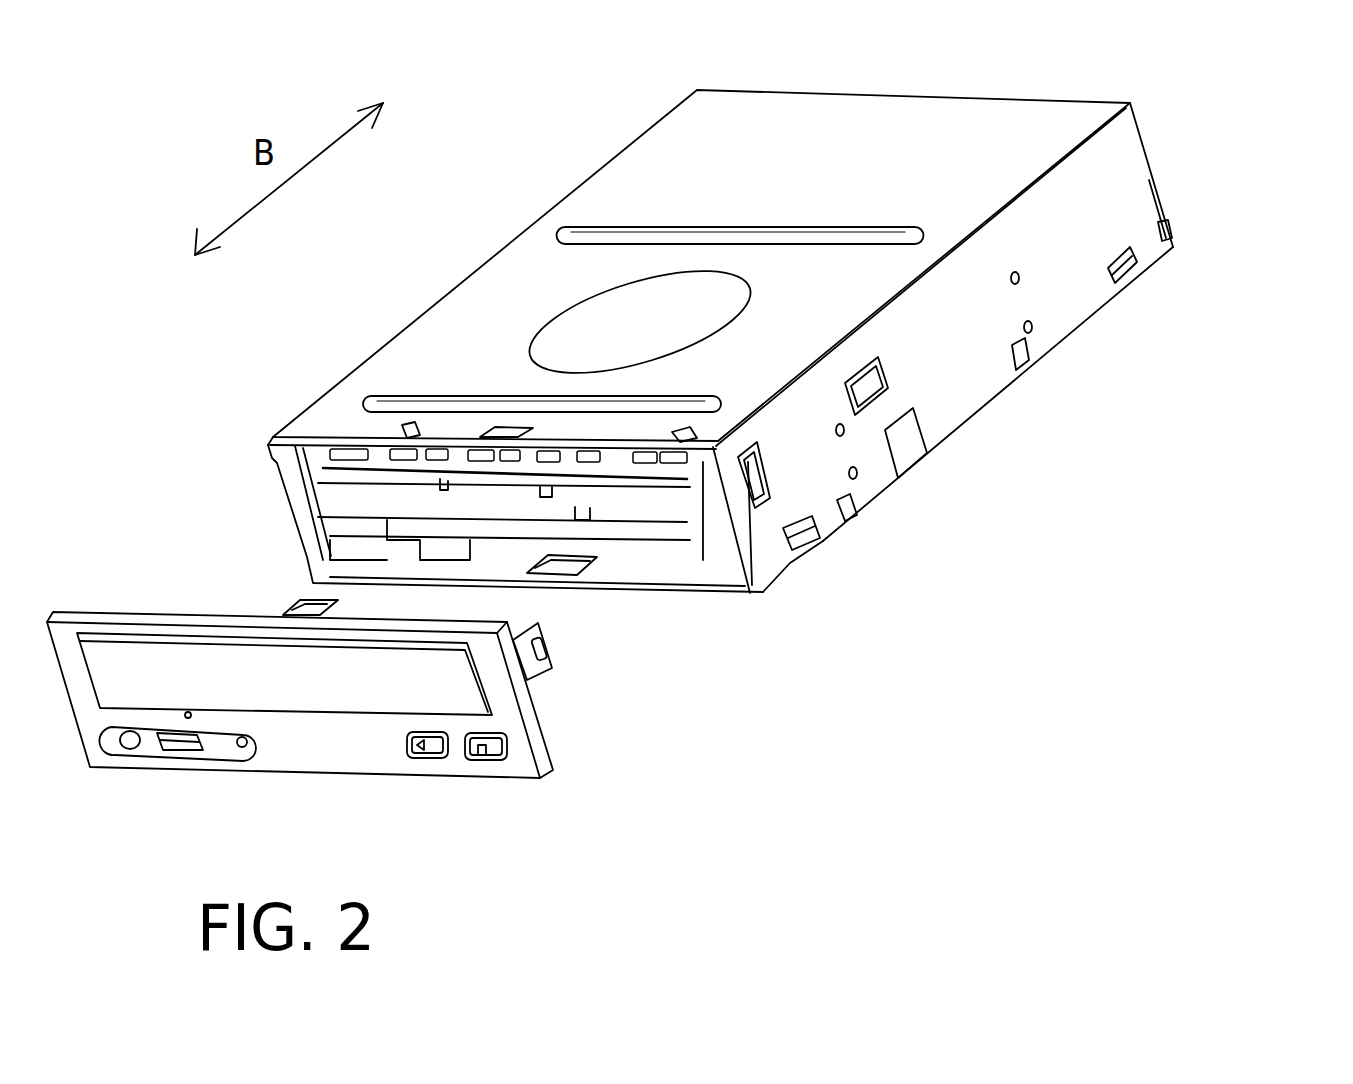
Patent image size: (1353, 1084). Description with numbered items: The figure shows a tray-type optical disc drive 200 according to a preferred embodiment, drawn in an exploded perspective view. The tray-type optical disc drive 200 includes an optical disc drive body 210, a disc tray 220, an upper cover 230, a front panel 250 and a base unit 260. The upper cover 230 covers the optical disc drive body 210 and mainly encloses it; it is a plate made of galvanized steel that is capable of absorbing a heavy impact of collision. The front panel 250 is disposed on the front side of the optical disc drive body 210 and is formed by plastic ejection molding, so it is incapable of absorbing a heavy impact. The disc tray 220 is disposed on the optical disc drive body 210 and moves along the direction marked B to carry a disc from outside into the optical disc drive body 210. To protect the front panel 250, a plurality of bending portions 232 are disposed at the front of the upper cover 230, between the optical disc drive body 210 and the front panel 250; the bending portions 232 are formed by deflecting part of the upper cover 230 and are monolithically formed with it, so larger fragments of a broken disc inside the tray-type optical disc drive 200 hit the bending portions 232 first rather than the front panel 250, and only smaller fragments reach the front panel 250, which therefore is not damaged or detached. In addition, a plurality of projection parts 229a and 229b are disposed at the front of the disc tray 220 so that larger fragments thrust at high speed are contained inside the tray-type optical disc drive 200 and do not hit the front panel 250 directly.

The tray-type optical disc drive 200 is at (1298, 92).
The optical disc drive body 210 is at (754, 363).
The disc tray 220 is at (653, 505).
The upper cover 230 is at (663, 157).
The bending portion 232 is at (342, 447).
The projection part 229a is at (455, 467).
The projection part 229b is at (550, 463).
The front panel 250 is at (537, 735).
The base unit 260 is at (345, 527).